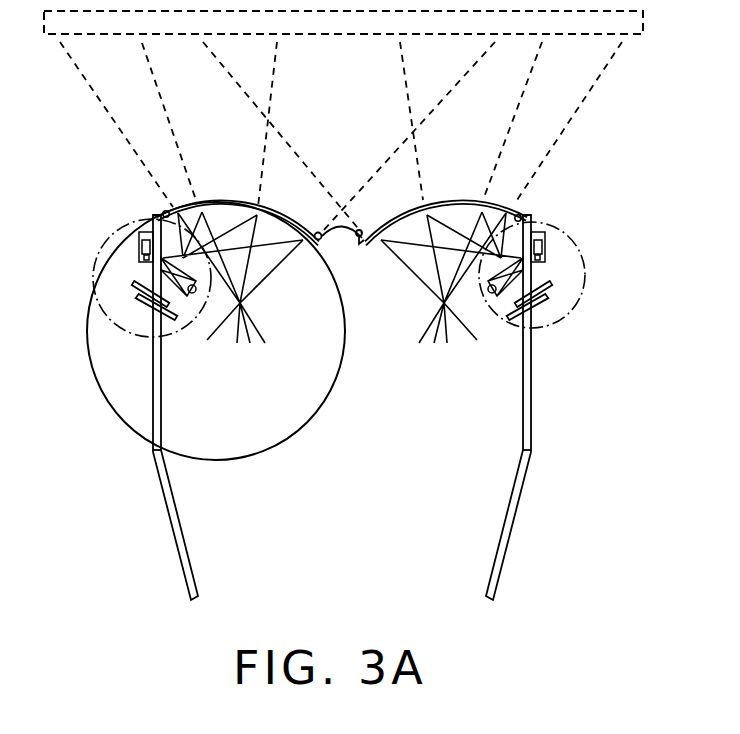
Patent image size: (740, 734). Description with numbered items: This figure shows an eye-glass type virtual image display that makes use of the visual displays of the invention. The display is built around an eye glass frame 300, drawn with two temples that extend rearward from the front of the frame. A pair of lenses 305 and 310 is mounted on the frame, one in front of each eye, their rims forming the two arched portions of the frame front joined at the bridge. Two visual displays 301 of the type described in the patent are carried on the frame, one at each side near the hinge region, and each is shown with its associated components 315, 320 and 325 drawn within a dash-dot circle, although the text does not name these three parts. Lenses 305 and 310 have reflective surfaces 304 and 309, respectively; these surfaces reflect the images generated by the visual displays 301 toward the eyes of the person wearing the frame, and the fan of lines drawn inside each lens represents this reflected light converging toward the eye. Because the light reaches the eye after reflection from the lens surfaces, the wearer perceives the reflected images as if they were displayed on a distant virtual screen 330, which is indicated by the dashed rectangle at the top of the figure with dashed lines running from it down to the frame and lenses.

The eye glass frame 300 is at (532, 403).
The visual display 301 is at (133, 338).
The reflective surface 304 is at (312, 194).
The lens 305 is at (208, 203).
The reflective surface 309 is at (469, 174).
The lens 310 is at (517, 205).
The light source 315 is at (180, 317).
The camera 320 is at (133, 250).
The lens optics 325 is at (192, 290).
The distant virtual screen 330 is at (402, 24).